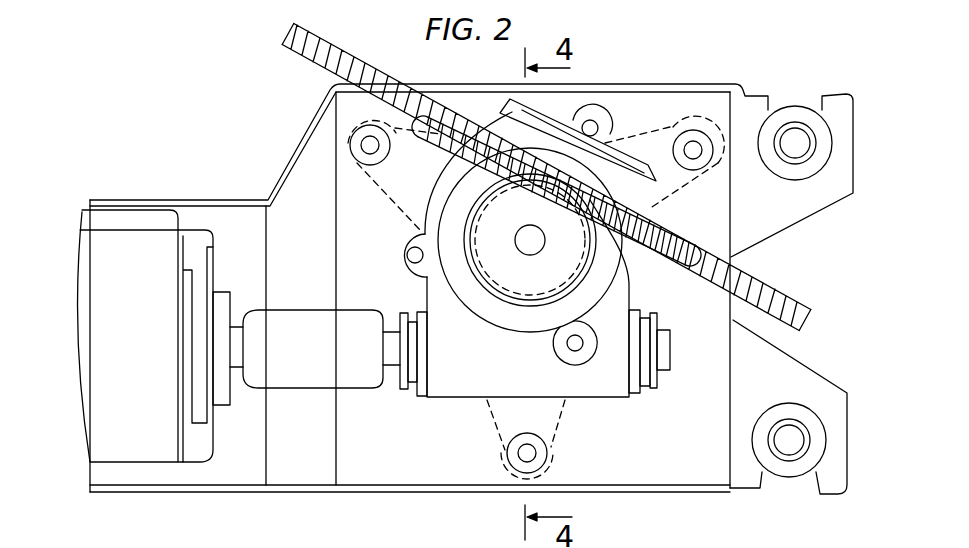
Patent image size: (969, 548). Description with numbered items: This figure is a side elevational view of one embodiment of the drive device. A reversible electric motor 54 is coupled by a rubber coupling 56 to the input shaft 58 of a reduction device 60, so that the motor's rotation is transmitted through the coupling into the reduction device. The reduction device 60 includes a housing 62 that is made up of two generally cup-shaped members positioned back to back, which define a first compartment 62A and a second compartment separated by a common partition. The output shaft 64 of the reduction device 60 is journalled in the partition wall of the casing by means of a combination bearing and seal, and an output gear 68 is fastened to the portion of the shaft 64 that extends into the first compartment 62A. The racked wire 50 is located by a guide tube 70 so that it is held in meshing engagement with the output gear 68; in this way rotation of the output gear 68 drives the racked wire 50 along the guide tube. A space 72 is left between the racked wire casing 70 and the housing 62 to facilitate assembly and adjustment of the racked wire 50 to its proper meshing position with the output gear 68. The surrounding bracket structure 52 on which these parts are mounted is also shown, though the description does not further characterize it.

The racked wire 50 is at (286, 38).
The mounting bracket 52 is at (246, 186).
The reversible electric motor 54 is at (108, 237).
The rubber coupling 56 is at (293, 381).
The input shaft 58 is at (393, 334).
The reduction device 60 is at (441, 396).
The housing 62 is at (630, 286).
The first compartment 62A is at (535, 318).
The output shaft 64 is at (524, 254).
The output gear 68 is at (513, 292).
The guide tube 70 is at (693, 225).
The space 72 is at (673, 190).